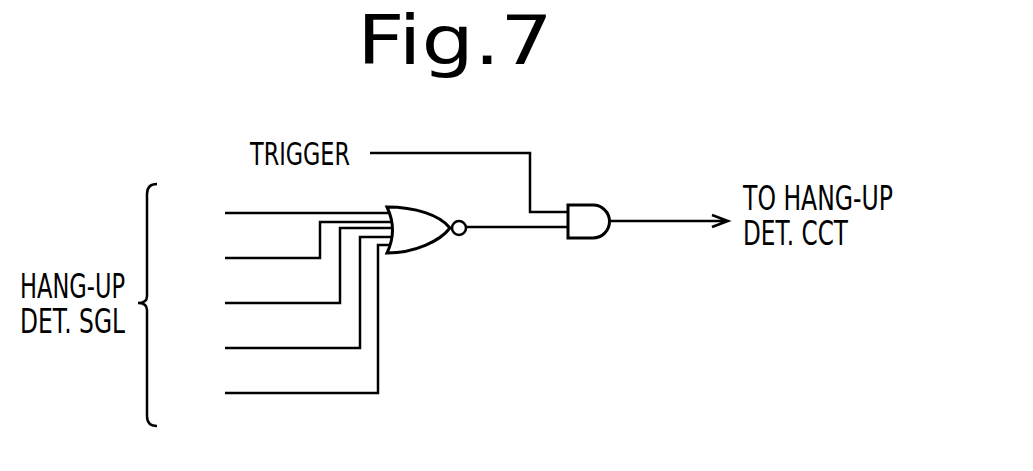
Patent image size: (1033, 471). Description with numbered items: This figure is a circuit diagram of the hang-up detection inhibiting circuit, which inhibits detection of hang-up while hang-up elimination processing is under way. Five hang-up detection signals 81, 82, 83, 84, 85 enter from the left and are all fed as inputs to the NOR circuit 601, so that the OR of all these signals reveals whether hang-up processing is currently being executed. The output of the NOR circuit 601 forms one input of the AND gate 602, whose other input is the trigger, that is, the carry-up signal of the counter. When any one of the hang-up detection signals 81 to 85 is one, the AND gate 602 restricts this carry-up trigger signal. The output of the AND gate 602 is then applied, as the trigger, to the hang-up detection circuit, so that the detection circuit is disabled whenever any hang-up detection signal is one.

The hang-up detection signal 81 is at (281, 218).
The hang-up detection signal 82 is at (282, 252).
The hang-up detection signal 83 is at (282, 278).
The hang-up detection signal 84 is at (282, 305).
The hang-up detection signal 85 is at (281, 330).
The NOR circuit 601 is at (421, 207).
The AND gate 602 is at (609, 235).